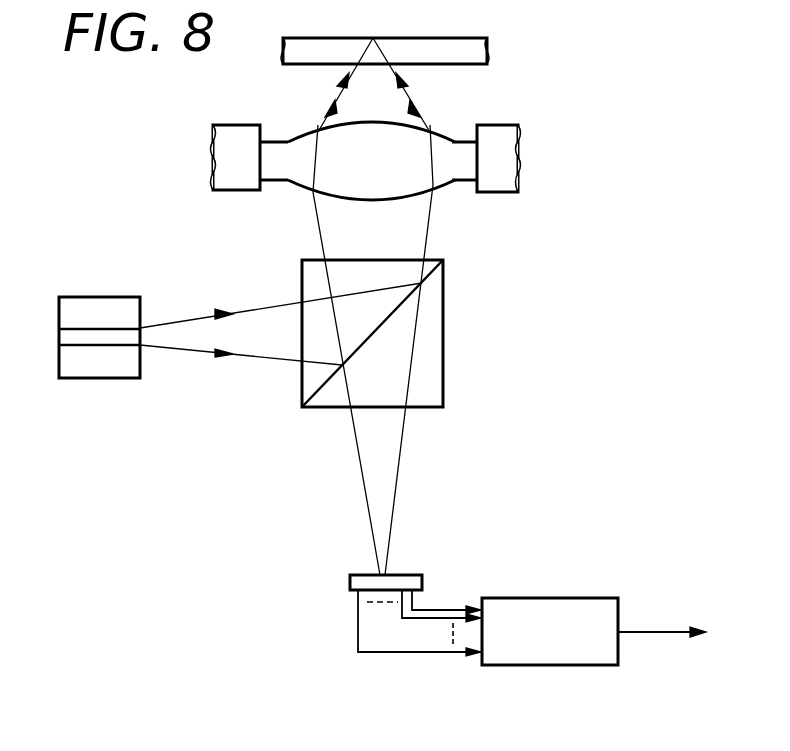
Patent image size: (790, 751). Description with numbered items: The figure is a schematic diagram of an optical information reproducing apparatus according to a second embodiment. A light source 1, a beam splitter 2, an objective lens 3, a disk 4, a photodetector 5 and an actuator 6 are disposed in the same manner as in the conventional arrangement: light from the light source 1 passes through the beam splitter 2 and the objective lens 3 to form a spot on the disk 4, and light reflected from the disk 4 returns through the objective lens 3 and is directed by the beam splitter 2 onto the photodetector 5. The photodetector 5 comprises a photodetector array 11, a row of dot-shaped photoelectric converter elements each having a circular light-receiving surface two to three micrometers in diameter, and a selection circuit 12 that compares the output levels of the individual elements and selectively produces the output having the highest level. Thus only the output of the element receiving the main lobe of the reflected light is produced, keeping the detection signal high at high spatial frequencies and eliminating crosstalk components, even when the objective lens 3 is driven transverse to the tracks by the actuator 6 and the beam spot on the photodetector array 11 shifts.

The light source 1 is at (125, 378).
The beam splitter 2 is at (443, 388).
The objective lens 3 is at (441, 185).
The disk 4 is at (473, 37).
The photodetector 5 is at (338, 629).
The actuator 6 is at (518, 181).
The photodetector array 11 is at (422, 580).
The selection circuit 12 is at (590, 598).